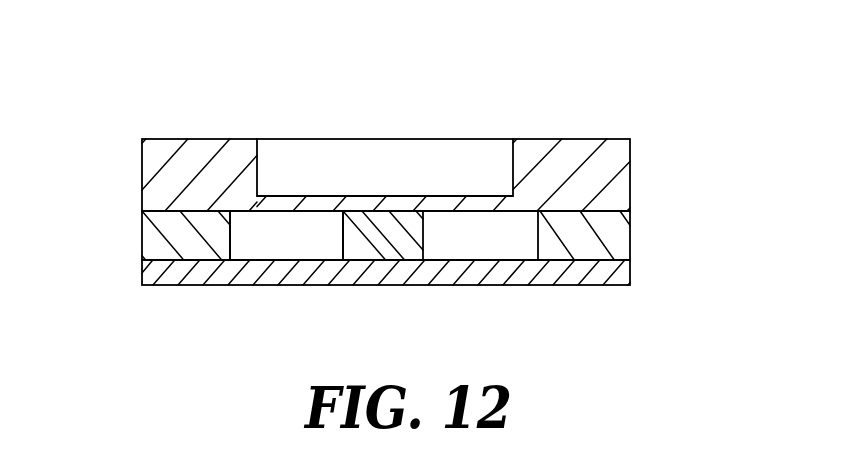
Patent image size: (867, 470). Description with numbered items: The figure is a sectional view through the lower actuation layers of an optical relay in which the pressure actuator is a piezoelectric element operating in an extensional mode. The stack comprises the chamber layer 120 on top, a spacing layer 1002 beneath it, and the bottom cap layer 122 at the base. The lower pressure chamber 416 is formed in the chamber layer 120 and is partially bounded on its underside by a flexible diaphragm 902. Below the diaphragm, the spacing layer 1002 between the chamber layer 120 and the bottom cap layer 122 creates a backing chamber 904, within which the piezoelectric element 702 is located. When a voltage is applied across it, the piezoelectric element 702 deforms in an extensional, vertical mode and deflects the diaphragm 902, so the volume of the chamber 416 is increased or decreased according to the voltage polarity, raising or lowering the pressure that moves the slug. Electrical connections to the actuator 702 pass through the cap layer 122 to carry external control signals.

The chamber layer 120 is at (632, 165).
The bottom cap layer 122 is at (632, 265).
The chamber 416 is at (492, 163).
The piezoelectric element 702 is at (385, 223).
The flexible diaphragm 902 is at (353, 194).
The backing chamber 904 is at (255, 240).
The spacing layer 1002 is at (632, 240).